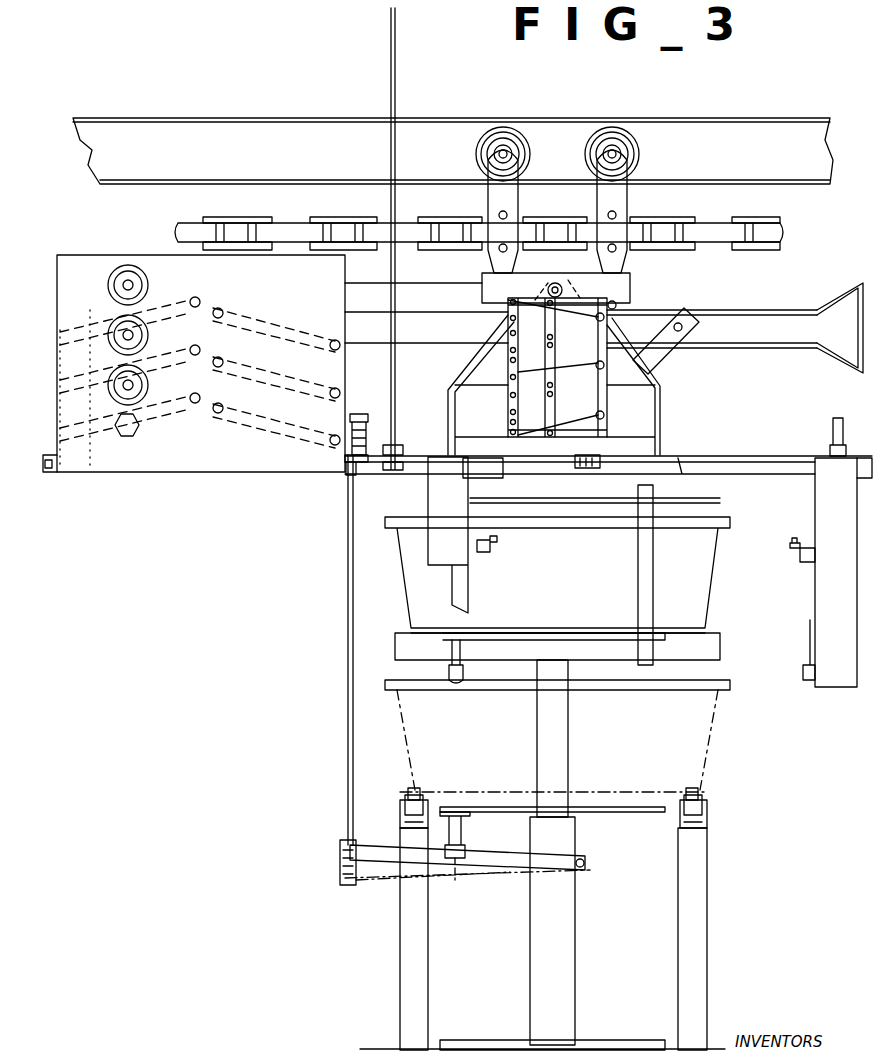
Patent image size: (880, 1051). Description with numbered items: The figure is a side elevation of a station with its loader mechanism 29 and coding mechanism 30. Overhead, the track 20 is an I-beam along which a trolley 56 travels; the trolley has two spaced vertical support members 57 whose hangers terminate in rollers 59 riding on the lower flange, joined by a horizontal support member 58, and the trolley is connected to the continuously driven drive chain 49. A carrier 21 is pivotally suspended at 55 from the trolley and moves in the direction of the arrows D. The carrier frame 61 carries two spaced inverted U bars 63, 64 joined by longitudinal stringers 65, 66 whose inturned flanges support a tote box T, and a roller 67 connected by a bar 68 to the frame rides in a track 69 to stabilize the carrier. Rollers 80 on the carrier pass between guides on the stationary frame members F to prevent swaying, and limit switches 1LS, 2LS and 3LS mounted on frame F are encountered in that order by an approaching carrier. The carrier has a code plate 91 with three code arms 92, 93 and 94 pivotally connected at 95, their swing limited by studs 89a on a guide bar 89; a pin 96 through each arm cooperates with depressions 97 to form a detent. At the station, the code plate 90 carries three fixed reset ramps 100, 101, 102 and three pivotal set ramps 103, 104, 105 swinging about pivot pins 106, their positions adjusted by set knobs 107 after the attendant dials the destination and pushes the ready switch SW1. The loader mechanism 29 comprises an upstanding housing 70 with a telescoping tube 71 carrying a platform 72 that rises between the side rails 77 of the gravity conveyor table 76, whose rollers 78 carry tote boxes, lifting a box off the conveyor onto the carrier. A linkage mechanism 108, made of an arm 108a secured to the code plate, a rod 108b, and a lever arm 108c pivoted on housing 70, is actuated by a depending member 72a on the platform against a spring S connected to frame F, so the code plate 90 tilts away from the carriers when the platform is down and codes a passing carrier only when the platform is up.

The track 20 is at (183, 118).
The code plate 90 is at (376, 282).
The rollers 59 is at (604, 128).
The vertical support members 57 is at (510, 188).
The trolley 56 is at (636, 181).
The drive chain 49 is at (762, 250).
The coding mechanism 30 is at (146, 513).
The pivotal set ramp 103 is at (110, 290).
The pivotal set ramp 104 is at (113, 322).
The set knobs 107 is at (150, 247).
The pivot pin 106 is at (196, 296).
The fixed reset ramp 100 is at (262, 320).
The fixed reset ramp 101 is at (282, 320).
The fixed reset ramp 102 is at (290, 392).
The pivotal set ramp 105 is at (95, 408).
The ready switch SW1 is at (139, 430).
The spring S is at (360, 416).
The arm 108a is at (345, 462).
The rod 108b is at (348, 625).
The lever arm 108c is at (470, 864).
The linkage mechanism 108 is at (306, 838).
The arrows indicating direction of carrier travel D is at (310, 565).
The stationary frame members F is at (792, 498).
The second limit switch 2LS is at (798, 560).
The first limit switch 1LS is at (806, 678).
The horizontal support member 58 is at (620, 290).
The pivotal suspension 55 is at (566, 274).
The code arm 92 is at (618, 306).
The guide bar 89 is at (552, 358).
The code arm 94 is at (575, 432).
The pin 96 is at (508, 302).
The code plate 91 is at (505, 318).
The studs 89a is at (506, 340).
The code arm 93 is at (508, 372).
The depressions 97 is at (510, 425).
The pivotal connection 95 is at (598, 418).
The bar 68 is at (695, 333).
The track 69 is at (808, 340).
The carrier frame 61 is at (655, 380).
The roller 67 is at (690, 323).
The carrier 21 is at (718, 418).
The bar 64 is at (470, 590).
The rollers 80 is at (605, 470).
The third limit switch 3LS is at (497, 540).
The bar 63 is at (653, 565).
The platform 72 is at (488, 632).
The depending member 72a is at (470, 686).
The tote box T is at (725, 680).
The longitudinal stringer 66 is at (420, 682).
The longitudinal stringer 65 is at (678, 650).
The tube 71 is at (537, 742).
The housing 70 is at (568, 962).
The gravity conveyor table 76 is at (718, 955).
The side rails 77 is at (402, 812).
The rollers 78 is at (408, 792).
The loader mechanism 29 is at (601, 842).